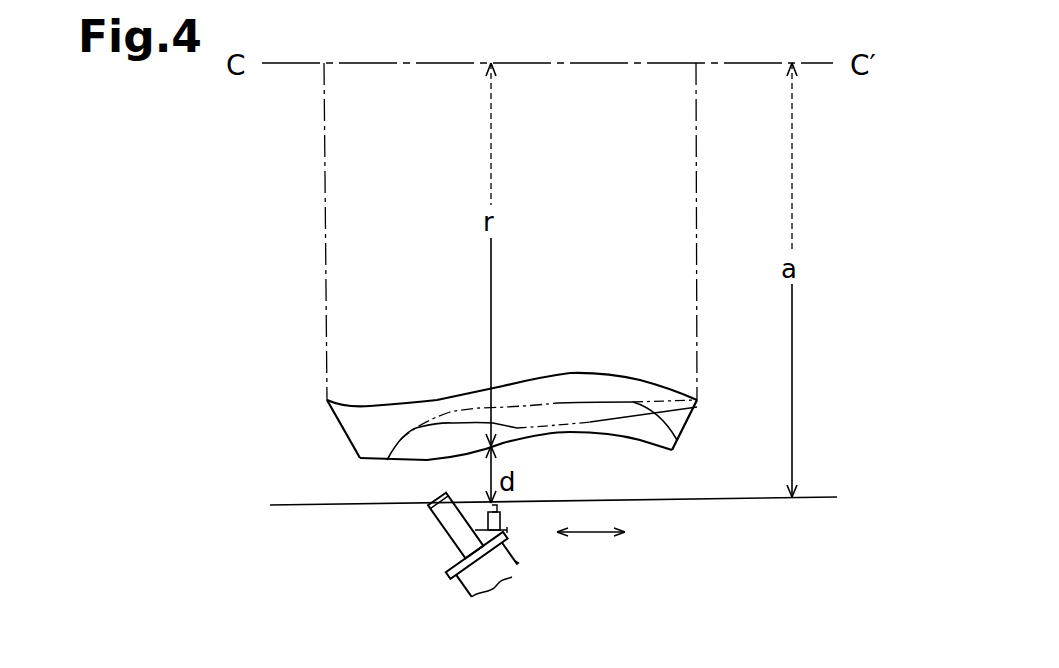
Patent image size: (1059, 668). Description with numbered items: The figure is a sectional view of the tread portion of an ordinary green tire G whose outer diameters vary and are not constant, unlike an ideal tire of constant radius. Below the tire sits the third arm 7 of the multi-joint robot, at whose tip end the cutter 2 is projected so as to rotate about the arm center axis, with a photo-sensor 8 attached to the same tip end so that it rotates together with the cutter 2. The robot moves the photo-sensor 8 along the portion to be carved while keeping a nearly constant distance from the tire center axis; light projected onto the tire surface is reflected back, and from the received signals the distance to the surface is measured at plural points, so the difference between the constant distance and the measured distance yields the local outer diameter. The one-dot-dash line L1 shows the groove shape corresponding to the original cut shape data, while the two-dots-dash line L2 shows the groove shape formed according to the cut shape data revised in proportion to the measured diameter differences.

The cutter 2 is at (442, 532).
The third arm 7 is at (463, 587).
The photo-sensor 8 is at (505, 520).
The green tire G is at (338, 430).
The one-dot-dash line L1 is at (623, 427).
The two-dots-dash line L2 is at (685, 435).